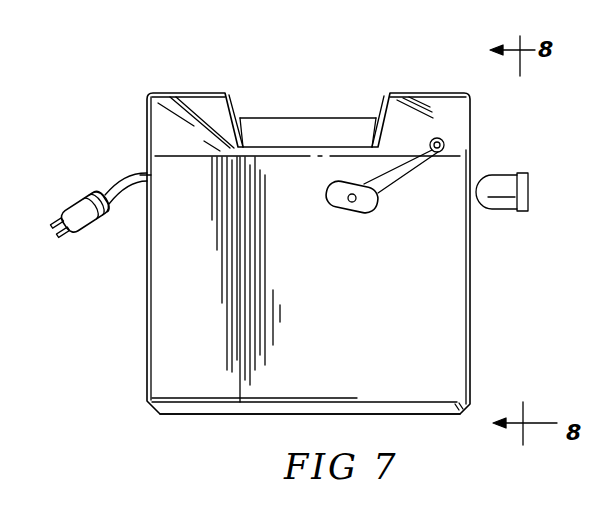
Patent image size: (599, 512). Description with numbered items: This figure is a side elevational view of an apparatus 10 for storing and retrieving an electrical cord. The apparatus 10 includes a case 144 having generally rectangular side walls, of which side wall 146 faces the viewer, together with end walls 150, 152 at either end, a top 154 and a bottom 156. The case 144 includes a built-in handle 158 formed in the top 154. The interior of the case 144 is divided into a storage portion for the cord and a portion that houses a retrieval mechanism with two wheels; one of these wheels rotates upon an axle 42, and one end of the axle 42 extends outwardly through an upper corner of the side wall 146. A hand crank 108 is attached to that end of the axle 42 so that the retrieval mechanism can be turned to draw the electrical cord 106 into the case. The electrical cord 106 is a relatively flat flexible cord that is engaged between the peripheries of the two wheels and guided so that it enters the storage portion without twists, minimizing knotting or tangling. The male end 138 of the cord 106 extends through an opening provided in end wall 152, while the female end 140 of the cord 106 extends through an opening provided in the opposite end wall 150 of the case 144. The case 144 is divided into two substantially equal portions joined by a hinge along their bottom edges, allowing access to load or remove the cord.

The apparatus 10 is at (332, 78).
The axle 42 is at (443, 141).
The electrical cord 106 is at (122, 175).
The hand crank 108 is at (387, 206).
The male end 138 is at (85, 197).
The female end 140 is at (503, 182).
The case 144 is at (215, 420).
The side wall 146 is at (315, 273).
The end wall 150 is at (472, 277).
The end wall 152 is at (147, 318).
The top 154 is at (190, 92).
The bottom 156 is at (275, 416).
The handle 158 is at (336, 118).